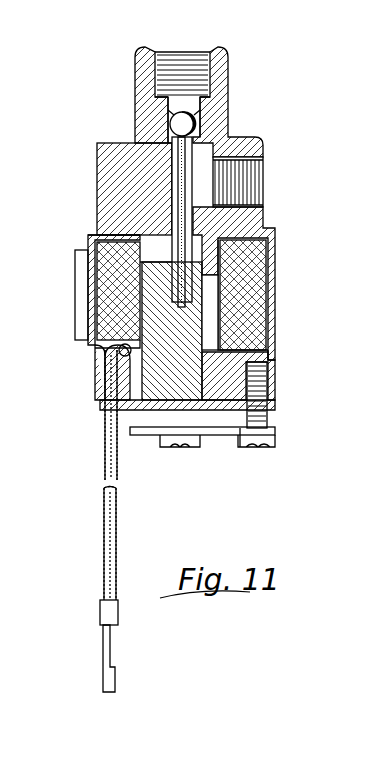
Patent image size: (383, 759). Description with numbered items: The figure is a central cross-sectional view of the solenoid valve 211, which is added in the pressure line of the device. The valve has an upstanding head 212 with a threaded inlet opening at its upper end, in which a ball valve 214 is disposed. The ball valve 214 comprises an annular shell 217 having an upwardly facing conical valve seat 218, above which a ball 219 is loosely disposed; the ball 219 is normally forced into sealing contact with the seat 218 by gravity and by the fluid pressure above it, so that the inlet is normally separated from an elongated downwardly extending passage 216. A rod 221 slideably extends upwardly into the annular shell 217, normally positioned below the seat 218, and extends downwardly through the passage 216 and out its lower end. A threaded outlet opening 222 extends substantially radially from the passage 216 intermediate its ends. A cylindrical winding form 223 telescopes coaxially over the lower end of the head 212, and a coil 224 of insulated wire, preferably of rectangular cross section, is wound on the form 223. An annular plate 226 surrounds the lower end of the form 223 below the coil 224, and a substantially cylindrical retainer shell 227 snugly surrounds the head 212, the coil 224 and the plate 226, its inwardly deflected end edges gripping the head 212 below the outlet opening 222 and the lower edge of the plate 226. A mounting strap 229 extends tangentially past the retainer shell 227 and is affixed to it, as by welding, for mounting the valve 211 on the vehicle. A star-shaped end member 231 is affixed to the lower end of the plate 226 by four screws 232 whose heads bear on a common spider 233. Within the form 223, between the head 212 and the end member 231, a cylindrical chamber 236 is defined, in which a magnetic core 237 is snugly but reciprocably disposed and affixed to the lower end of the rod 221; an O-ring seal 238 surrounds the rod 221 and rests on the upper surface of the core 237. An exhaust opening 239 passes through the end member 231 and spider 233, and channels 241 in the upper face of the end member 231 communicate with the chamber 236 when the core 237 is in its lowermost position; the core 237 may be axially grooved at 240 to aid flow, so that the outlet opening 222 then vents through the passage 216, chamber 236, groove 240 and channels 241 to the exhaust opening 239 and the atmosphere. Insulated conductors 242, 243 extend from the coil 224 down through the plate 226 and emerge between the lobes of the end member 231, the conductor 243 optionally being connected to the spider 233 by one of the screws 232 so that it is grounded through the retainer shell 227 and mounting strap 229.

The solenoid valve 211 is at (282, 313).
The upstanding head 212 is at (168, 52).
The ball valve 214 is at (222, 84).
The passage 216 is at (168, 162).
The annular shell 217 is at (150, 147).
The valve seat 218 is at (170, 126).
The ball 219 is at (176, 118).
The rod 221 is at (178, 180).
The outlet opening 222 is at (264, 167).
The winding form 223 is at (262, 268).
The coil 224 is at (262, 294).
The annular plate 226 is at (256, 371).
The retainer shell 227 is at (272, 250).
The mounting strap 229 is at (75, 258).
The end member 231 is at (267, 410).
The screws 232 is at (265, 428).
The spider 233 is at (212, 437).
The cylindrical chamber 236 is at (125, 362).
The magnetic core 237 is at (150, 372).
The O-ring seal 238 is at (100, 228).
The exhaust opening 239 is at (185, 449).
The groove 240 is at (212, 340).
The channels 241 is at (262, 448).
The insulated conductor 242 is at (104, 520).
The insulated conductor 243 is at (117, 458).